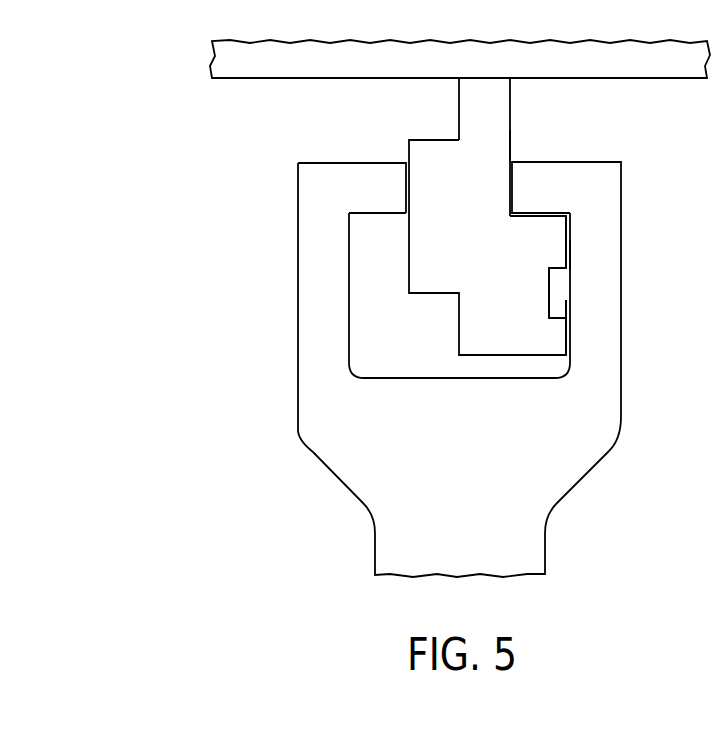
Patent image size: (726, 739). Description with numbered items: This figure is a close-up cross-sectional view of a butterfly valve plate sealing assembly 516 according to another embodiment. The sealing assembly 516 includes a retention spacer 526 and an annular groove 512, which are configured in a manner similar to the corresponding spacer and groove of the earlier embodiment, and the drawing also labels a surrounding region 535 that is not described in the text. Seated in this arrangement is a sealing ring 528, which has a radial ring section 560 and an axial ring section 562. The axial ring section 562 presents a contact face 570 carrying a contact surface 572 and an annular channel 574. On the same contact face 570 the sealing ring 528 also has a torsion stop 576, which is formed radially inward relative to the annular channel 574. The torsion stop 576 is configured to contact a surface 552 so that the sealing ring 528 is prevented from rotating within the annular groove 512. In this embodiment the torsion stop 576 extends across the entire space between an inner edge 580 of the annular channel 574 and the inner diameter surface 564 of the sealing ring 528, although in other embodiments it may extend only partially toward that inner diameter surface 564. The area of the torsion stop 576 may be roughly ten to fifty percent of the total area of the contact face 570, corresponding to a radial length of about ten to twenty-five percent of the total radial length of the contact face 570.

The butterfly valve plate sealing assembly 516 is at (254, 196).
The annular groove 512 is at (370, 307).
The housing 535 is at (370, 354).
The retention spacer 526 is at (447, 238).
The sealing ring 528 is at (505, 112).
The radial ring section 560 is at (503, 142).
The contact face 570 is at (565, 228).
The contact surface 572 is at (567, 230).
The surface 552 is at (570, 253).
The annular channel 574 is at (558, 283).
The inner edge 580 is at (568, 307).
The torsion stop 576 is at (568, 335).
The inner diameter surface 564 is at (500, 357).
The axial ring section 562 is at (523, 285).